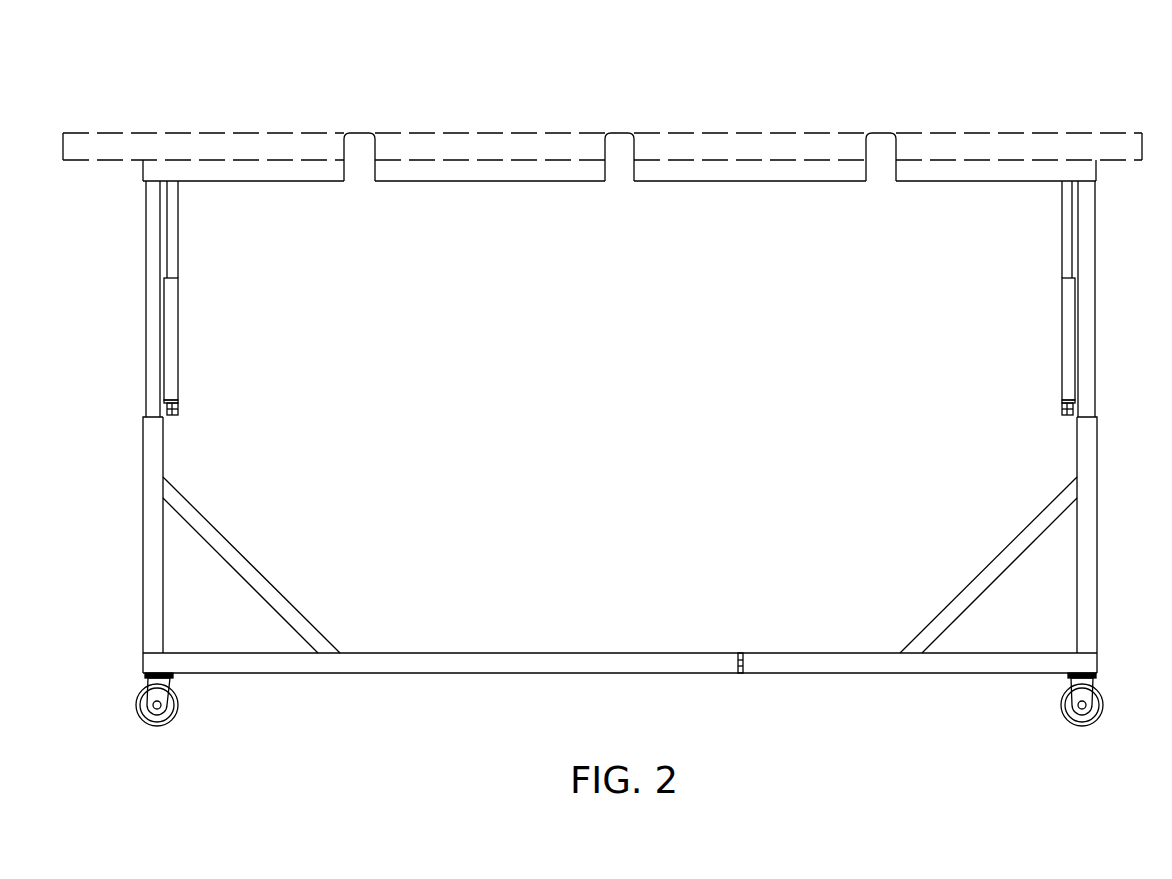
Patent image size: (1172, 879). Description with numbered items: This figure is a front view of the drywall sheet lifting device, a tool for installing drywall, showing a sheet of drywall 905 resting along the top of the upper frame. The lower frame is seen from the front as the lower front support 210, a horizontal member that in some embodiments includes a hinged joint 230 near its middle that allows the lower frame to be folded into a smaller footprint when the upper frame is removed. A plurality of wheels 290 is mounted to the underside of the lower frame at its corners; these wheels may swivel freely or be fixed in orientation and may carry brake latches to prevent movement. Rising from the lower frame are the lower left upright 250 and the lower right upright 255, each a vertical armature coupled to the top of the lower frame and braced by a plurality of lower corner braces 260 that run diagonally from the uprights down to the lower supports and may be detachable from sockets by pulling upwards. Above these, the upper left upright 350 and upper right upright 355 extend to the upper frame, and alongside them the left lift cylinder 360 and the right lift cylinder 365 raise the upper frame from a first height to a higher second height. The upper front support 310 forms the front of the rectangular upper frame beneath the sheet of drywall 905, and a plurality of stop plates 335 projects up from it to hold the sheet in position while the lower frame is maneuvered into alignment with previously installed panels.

The sheet of drywall 905 is at (993, 138).
The upper front support 310 is at (470, 182).
The stop plates 335 is at (615, 142).
The upper left upright 350 is at (148, 320).
The upper right upright 355 is at (1090, 293).
The left lift cylinder 360 is at (173, 312).
The right lift cylinder 365 is at (1067, 322).
The lower left upright 250 is at (150, 530).
The lower right upright 255 is at (1093, 577).
The lower corner braces 260 is at (248, 565).
The lower front support 210 is at (480, 658).
The hinged joint 230 is at (741, 673).
The wheels 290 is at (168, 725).